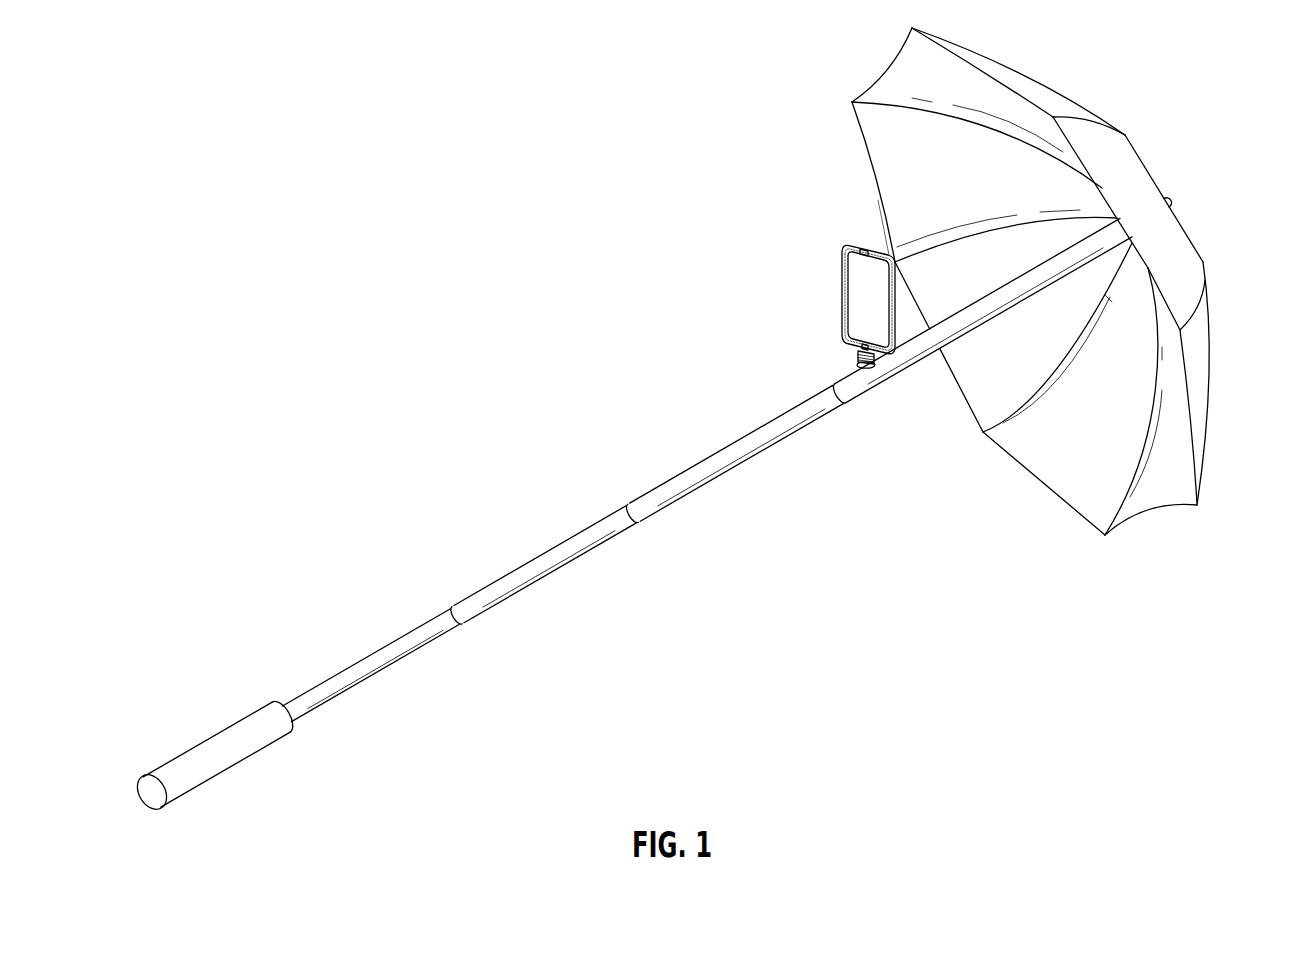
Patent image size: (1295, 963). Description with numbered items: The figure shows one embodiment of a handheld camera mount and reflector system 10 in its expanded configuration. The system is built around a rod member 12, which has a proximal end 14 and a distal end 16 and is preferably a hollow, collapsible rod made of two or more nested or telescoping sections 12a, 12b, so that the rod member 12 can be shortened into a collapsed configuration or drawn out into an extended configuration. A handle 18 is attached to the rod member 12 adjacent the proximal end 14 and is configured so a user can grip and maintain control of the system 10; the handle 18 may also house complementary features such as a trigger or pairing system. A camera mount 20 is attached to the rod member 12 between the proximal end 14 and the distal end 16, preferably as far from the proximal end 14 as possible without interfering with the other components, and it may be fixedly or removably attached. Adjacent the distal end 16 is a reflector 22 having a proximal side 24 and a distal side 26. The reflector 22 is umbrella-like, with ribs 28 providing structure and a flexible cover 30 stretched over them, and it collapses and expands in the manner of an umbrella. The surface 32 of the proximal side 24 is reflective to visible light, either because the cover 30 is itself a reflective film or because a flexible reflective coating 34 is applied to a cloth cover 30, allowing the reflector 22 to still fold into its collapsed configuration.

The handheld camera mount and reflector system 10 is at (541, 317).
The rod member 12 is at (598, 546).
The telescoping section 12a is at (500, 573).
The telescoping section 12b is at (377, 648).
The proximal end 14 is at (142, 772).
The distal end 16 is at (1175, 202).
The handle 18 is at (240, 767).
The camera mount 20 is at (843, 302).
The reflector 22 is at (1047, 85).
The proximal side 24 is at (1050, 462).
The distal side 26 is at (1222, 280).
The ribs 28 is at (1007, 407).
The flexible cover 30 is at (1168, 242).
The reflective surface 32 is at (890, 79).
The reflective coating 34 is at (889, 182).